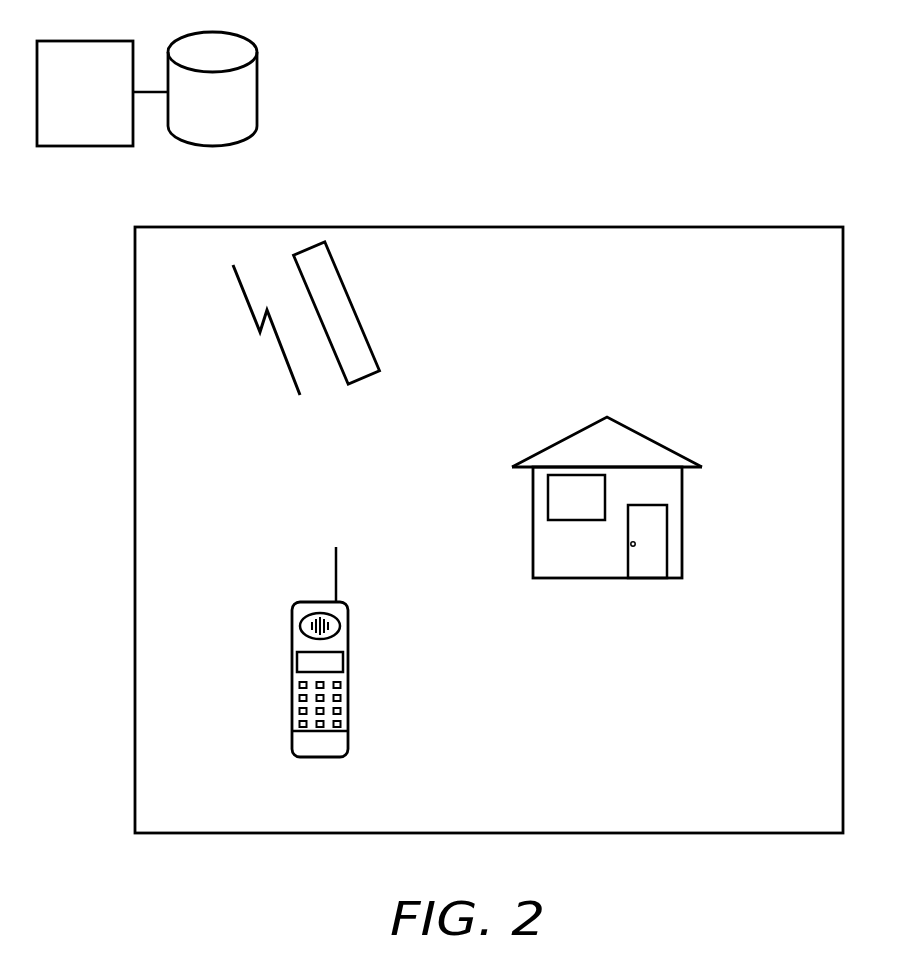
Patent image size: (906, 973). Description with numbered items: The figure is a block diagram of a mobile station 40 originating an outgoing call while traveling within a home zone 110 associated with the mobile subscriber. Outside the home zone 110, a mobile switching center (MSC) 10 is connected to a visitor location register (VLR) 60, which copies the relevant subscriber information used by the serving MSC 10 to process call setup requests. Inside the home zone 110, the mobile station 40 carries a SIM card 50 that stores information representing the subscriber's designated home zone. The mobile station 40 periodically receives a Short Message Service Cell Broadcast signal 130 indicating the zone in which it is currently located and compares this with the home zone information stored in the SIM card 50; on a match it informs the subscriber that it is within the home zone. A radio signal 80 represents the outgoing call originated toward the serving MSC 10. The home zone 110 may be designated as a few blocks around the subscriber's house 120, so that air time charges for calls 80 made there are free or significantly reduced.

The mobile switching center (MSC) 10 is at (98, 38).
The visitor location register (VLR) 60 is at (257, 88).
The home zone 110 is at (580, 225).
The radio signal 80 is at (287, 368).
The Short Message Service Cell Broadcast signal 130 is at (350, 286).
The house 120 is at (662, 443).
The mobile station 40 is at (348, 683).
The SIM card 50 is at (340, 739).